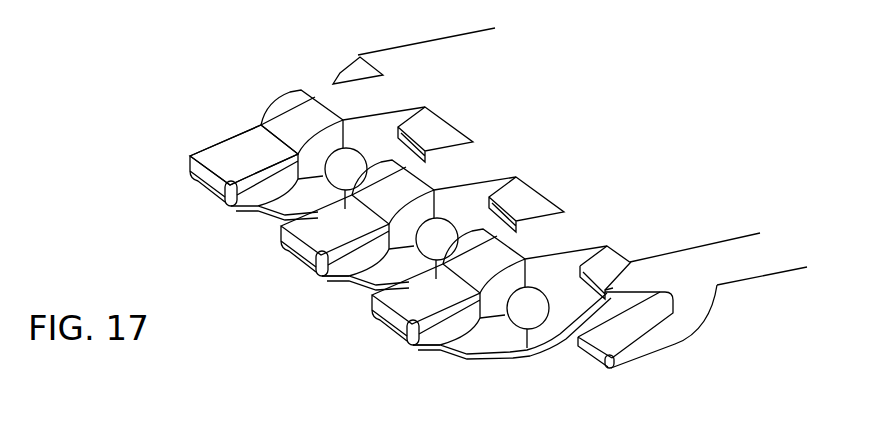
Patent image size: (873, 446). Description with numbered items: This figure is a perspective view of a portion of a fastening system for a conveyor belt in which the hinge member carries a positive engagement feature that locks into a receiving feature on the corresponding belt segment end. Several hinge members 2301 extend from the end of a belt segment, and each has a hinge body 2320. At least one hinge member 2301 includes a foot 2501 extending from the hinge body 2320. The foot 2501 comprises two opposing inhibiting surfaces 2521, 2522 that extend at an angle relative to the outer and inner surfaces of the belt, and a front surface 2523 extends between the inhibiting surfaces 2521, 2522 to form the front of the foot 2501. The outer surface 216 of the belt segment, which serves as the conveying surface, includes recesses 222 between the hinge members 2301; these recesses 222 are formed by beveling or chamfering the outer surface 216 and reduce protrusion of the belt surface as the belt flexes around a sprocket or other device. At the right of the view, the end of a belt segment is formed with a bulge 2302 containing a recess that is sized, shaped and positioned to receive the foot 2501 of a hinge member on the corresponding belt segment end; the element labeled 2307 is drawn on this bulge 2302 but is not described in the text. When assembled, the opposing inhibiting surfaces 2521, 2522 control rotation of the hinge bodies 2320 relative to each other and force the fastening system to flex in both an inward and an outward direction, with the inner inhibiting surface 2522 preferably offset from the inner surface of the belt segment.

The outer surface 216 is at (620, 168).
The recess 222 is at (520, 190).
The hinge member 2301 is at (235, 122).
The bulge 2302 is at (678, 333).
The end link block 2307 is at (628, 318).
The hinge body 2320 is at (316, 120).
The foot 2501 is at (267, 194).
The outer inhibiting surface 2521 is at (257, 169).
The inner inhibiting surface 2522 is at (335, 281).
The front surface 2523 is at (199, 178).